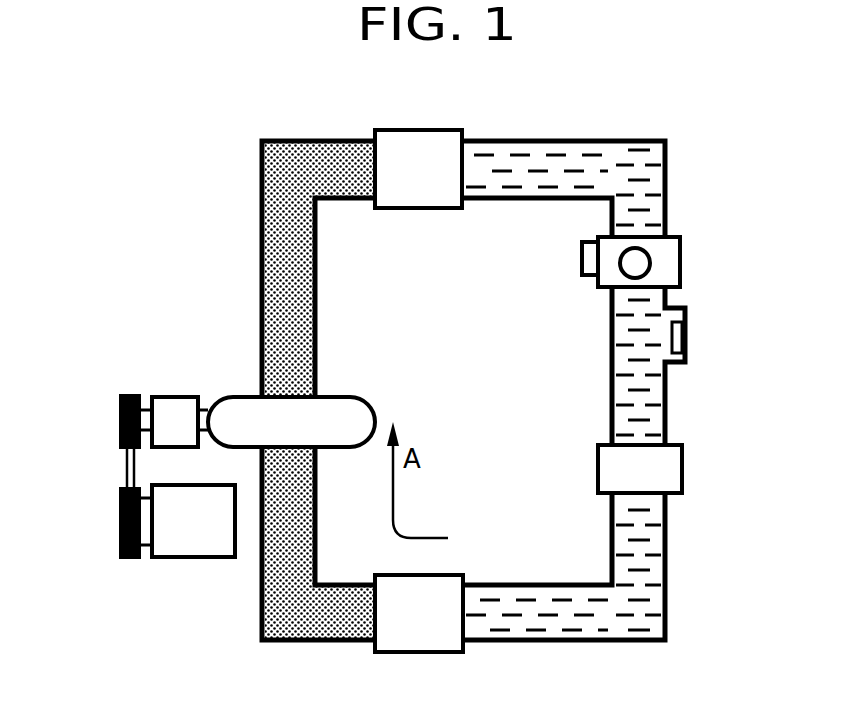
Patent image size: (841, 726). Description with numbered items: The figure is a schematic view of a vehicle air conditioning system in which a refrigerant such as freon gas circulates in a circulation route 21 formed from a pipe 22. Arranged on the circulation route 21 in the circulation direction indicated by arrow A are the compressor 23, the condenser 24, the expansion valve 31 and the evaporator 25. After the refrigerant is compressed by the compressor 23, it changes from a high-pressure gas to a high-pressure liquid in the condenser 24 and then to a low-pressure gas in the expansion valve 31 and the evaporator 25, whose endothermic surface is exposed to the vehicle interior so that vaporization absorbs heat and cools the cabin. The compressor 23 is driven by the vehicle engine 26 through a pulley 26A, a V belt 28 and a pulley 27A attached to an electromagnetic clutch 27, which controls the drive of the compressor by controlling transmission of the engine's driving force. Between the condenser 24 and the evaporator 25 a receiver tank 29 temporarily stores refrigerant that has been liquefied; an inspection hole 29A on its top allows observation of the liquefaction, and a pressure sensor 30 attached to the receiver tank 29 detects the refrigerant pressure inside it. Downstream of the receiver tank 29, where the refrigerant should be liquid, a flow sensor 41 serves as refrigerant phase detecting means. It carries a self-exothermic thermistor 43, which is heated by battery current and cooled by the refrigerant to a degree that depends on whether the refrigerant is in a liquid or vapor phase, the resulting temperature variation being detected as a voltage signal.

The circulation route 21 is at (300, 167).
The pipe 22 is at (262, 196).
The compressor 23 is at (237, 397).
The condenser 24 is at (418, 130).
The evaporator 25 is at (423, 645).
The engine 26 is at (188, 557).
The pulley 26A is at (120, 506).
The electromagnetic clutch 27 is at (168, 397).
The pulley 27A is at (125, 418).
The V belt 28 is at (127, 468).
The receiver tank 29 is at (680, 263).
The inspection hole 29A is at (652, 257).
The pressure sensor 30 is at (582, 257).
The expansion valve 31 is at (683, 473).
The flow sensor 41 is at (670, 365).
The thermistor 43 is at (685, 330).